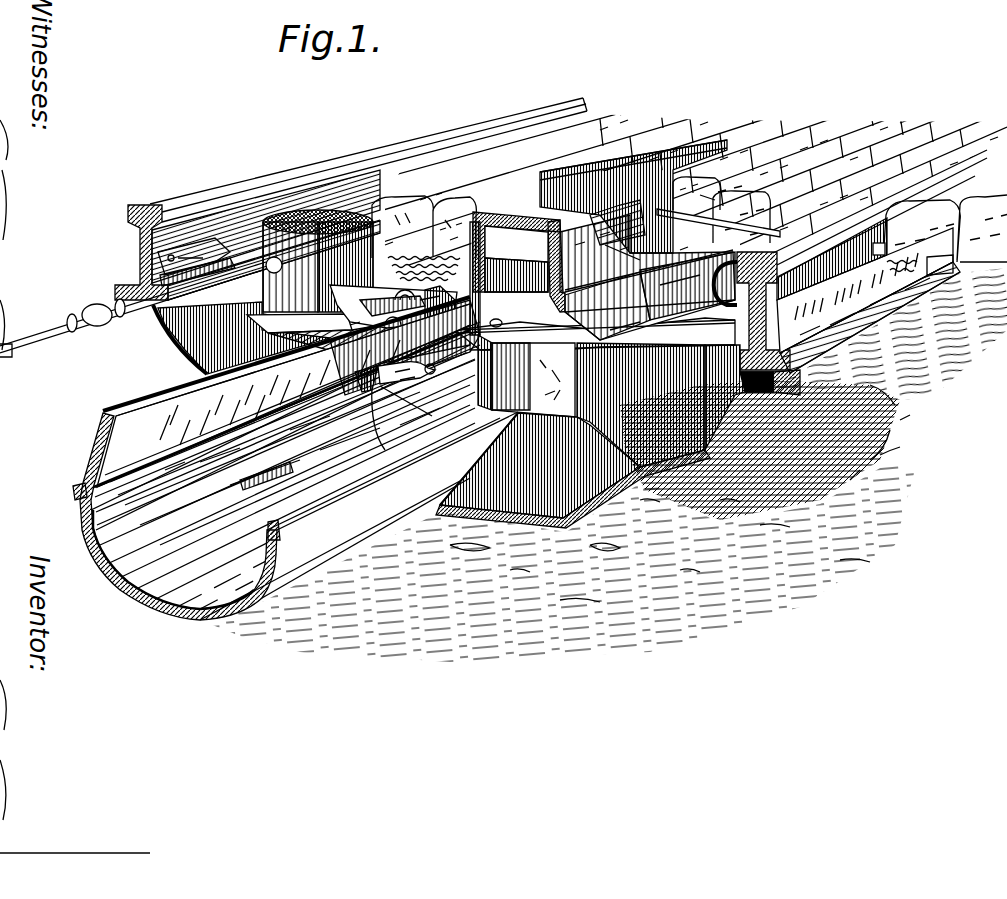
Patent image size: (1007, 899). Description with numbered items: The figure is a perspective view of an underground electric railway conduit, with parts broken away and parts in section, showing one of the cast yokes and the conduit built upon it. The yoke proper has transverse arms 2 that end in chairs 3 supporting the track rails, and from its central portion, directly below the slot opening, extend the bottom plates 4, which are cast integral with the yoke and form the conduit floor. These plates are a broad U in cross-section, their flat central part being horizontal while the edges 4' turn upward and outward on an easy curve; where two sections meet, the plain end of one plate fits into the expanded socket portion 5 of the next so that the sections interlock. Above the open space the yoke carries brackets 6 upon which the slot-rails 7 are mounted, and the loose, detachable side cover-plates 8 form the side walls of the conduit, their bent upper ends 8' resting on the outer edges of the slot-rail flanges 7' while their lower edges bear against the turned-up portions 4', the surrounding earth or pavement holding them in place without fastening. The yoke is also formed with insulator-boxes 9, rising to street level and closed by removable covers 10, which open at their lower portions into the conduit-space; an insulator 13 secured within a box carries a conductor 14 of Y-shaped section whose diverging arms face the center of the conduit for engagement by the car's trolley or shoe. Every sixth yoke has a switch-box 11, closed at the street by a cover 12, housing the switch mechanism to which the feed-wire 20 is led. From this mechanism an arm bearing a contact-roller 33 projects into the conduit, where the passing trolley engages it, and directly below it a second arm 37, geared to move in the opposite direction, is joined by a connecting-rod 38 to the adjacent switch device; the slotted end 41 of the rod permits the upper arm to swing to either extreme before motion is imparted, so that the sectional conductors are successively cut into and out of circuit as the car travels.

The transverse arm 2 is at (596, 337).
The chair 3 is at (752, 397).
The bottom plate 4 is at (299, 474).
The turned-up edge 4' is at (184, 508).
The socket portion 5 is at (850, 261).
The bracket 6 is at (426, 312).
The slot-rail 7 is at (592, 265).
The slot-rail flange 7' is at (650, 296).
The side cover-plate 8 is at (398, 381).
The upper end of side cover-plate 8' is at (418, 275).
The insulator-box 9 is at (573, 431).
The removable cover 10 is at (394, 293).
The switch-box 11 is at (318, 265).
The switch-box cover 12 is at (258, 200).
The insulator 13 is at (352, 382).
The conductor 14 is at (258, 418).
The feed-wire 20 is at (133, 309).
The contact-roller 33 is at (438, 373).
The arm 37 is at (391, 423).
The connecting-rod 38 is at (150, 512).
The rod end 41 is at (411, 411).